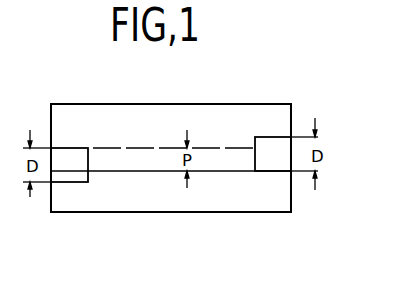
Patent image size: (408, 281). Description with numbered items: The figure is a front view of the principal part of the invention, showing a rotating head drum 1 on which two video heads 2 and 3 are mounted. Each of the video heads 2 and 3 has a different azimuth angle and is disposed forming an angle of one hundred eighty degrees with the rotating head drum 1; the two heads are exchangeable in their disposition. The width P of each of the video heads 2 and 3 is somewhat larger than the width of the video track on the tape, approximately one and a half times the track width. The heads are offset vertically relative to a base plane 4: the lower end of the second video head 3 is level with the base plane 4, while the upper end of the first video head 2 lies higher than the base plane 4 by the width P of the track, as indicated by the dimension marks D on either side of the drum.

The rotating head drum 1 is at (274, 115).
The first video head 2 is at (71, 177).
The second video head 3 is at (273, 162).
The base plane 4 is at (145, 171).